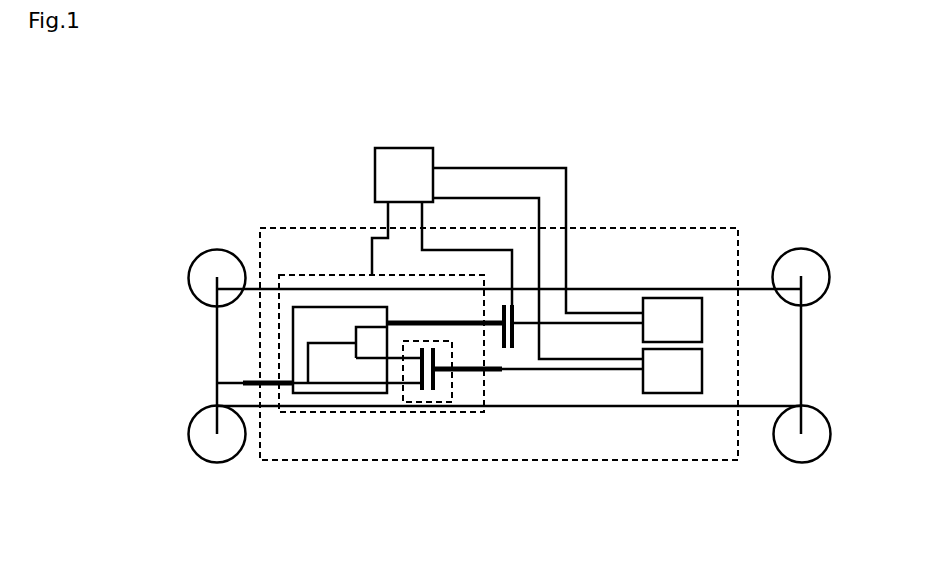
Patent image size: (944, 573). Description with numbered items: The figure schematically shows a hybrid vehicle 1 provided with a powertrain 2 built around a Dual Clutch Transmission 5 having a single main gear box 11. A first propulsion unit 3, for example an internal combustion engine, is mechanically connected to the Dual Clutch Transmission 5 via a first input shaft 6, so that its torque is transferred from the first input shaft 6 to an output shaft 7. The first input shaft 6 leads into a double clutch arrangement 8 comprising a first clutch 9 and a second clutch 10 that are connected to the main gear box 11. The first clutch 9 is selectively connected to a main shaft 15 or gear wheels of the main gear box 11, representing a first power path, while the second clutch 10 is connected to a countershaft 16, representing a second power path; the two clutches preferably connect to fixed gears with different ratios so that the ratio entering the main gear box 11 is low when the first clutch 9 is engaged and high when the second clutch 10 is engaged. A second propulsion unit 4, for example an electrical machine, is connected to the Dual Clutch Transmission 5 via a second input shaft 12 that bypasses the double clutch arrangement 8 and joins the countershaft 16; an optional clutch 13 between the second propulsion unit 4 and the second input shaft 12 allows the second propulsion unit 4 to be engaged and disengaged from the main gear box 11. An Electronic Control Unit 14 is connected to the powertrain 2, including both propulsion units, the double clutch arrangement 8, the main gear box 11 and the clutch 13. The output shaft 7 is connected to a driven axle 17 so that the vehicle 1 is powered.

The hybrid vehicle 1 is at (608, 138).
The powertrain 2 is at (669, 227).
The first propulsion unit 3 is at (672, 371).
The second propulsion unit 4 is at (672, 320).
The Dual Clutch Transmission 5 is at (343, 275).
The first input shaft 6 is at (480, 325).
The output shaft 7 is at (270, 386).
The double clutch arrangement 8 is at (440, 400).
The first clutch 9 is at (408, 400).
The second clutch 10 is at (403, 365).
The main gear box 11 is at (317, 307).
The second input shaft 12 is at (484, 369).
The clutch 13 is at (513, 332).
The Electronic Control Unit 14 is at (507, 253).
The main shaft 15 is at (356, 385).
The countershaft 16 is at (330, 345).
The axle 17 is at (215, 322).